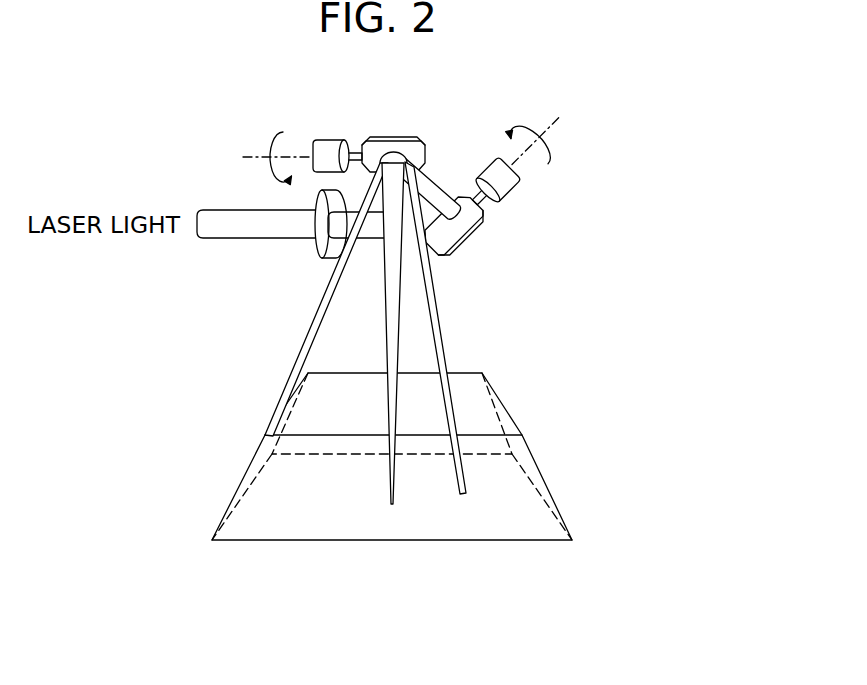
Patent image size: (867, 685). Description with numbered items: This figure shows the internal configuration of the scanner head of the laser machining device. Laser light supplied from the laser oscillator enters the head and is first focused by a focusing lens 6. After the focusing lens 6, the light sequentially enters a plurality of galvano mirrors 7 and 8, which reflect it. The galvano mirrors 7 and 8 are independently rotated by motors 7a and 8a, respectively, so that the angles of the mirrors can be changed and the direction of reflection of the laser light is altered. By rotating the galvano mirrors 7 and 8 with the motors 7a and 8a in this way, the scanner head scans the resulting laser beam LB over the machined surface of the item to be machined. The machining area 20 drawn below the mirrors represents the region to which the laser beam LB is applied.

The focusing lens 6 is at (332, 248).
The galvano mirror 7 is at (464, 231).
The motor 7a is at (493, 177).
The galvano mirror 8 is at (393, 146).
The motor 8a is at (330, 150).
The machining area 20 is at (467, 542).
The laser beam LB is at (449, 413).